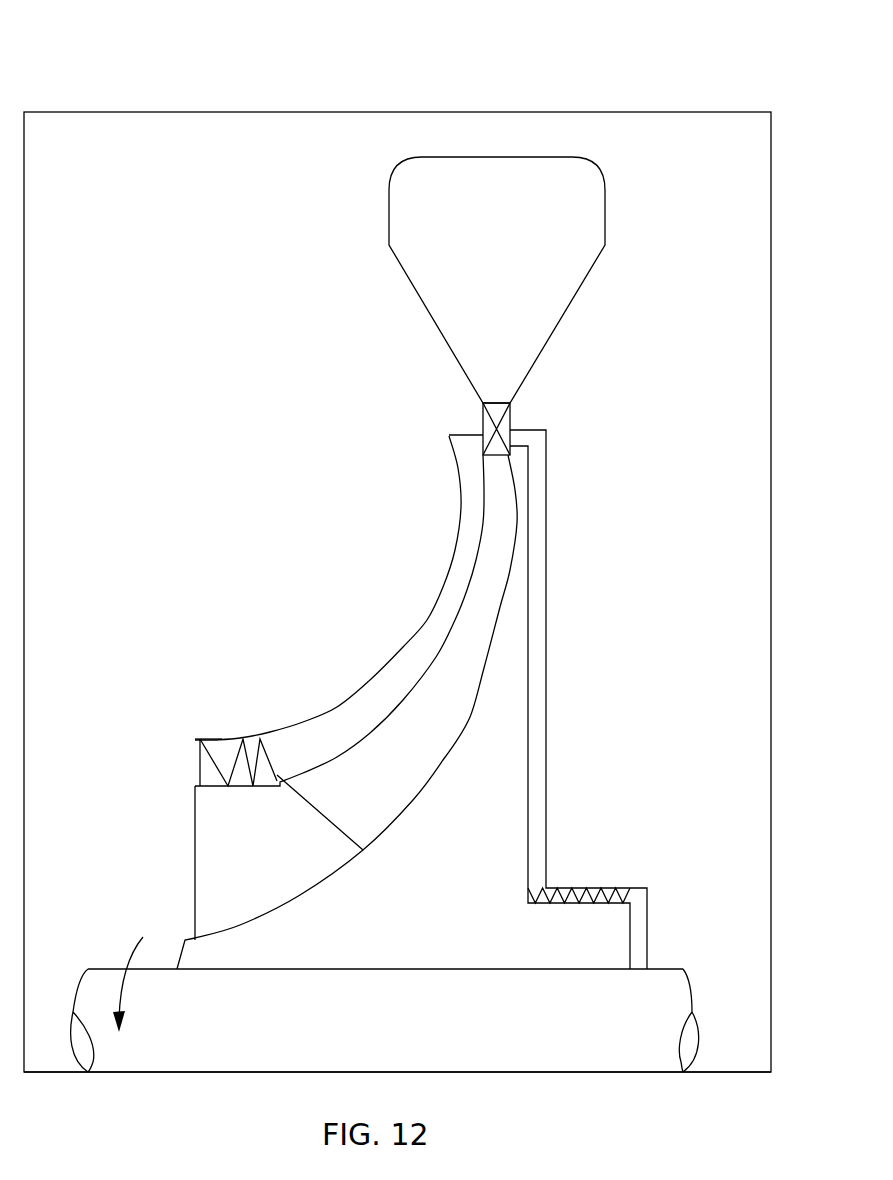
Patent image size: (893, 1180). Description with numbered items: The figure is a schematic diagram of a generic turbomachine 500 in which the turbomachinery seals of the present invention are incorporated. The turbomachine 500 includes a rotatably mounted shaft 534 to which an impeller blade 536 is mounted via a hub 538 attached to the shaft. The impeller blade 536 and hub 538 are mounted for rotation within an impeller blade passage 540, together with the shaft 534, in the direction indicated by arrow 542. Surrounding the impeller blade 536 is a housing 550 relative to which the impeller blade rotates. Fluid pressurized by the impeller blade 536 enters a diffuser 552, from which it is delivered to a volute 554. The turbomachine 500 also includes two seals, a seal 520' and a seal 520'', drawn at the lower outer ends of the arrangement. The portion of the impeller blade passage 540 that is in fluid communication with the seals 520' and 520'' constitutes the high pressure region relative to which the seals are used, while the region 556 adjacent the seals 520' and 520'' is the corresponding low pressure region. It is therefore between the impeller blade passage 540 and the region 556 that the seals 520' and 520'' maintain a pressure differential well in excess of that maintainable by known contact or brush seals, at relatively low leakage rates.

The turbomachine 500 is at (655, 88).
The housing 550 is at (750, 322).
The volute 554 is at (543, 292).
The diffuser 552 is at (513, 430).
The impeller blade passage 540 is at (547, 540).
The impeller blade 536 is at (386, 738).
The hub 538 is at (508, 742).
The region 556 is at (200, 759).
The seal 520'' is at (212, 738).
The seal 520' is at (618, 866).
The shaft 534 is at (497, 1048).
The arrow 542 is at (167, 960).